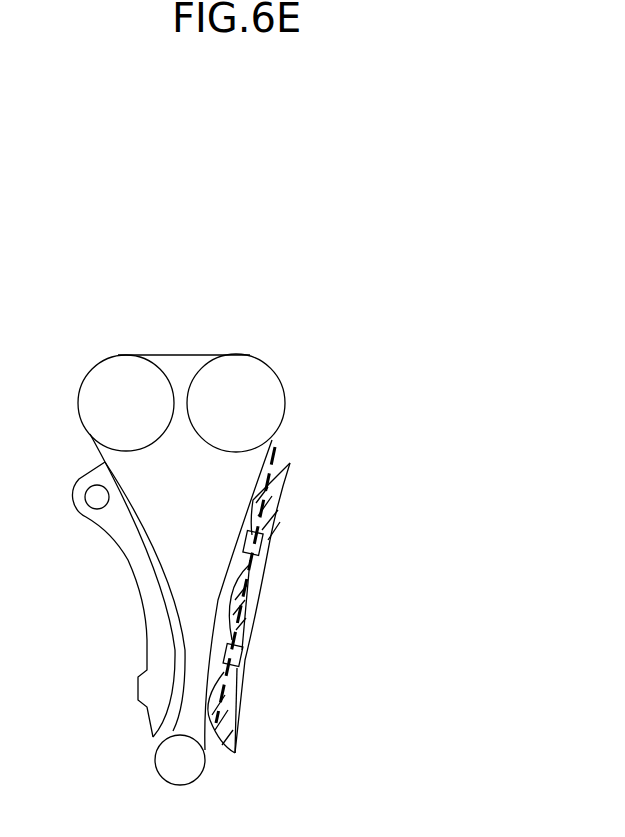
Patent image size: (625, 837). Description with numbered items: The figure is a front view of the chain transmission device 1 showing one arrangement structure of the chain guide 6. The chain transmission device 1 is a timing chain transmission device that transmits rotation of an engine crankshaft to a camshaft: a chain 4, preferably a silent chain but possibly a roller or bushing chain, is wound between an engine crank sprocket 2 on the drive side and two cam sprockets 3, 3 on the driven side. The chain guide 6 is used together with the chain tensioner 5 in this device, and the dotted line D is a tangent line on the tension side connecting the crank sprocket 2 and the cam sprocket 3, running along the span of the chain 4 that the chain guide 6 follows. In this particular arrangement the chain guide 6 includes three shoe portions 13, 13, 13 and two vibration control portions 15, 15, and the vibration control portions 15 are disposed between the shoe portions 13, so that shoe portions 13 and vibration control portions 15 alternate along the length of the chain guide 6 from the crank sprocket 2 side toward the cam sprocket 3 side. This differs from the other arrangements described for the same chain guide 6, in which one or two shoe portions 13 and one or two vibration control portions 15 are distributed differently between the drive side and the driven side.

The chain transmission device 1 is at (187, 323).
The crank sprocket 2 is at (165, 763).
The cam sprocket 3 is at (118, 366).
The chain 4 is at (243, 512).
The chain tensioner 5 is at (148, 578).
The chain guide 6 is at (247, 720).
The shoe portion 13 is at (280, 507).
The vibration control portion 15 is at (265, 553).
The tangent line D is at (255, 582).